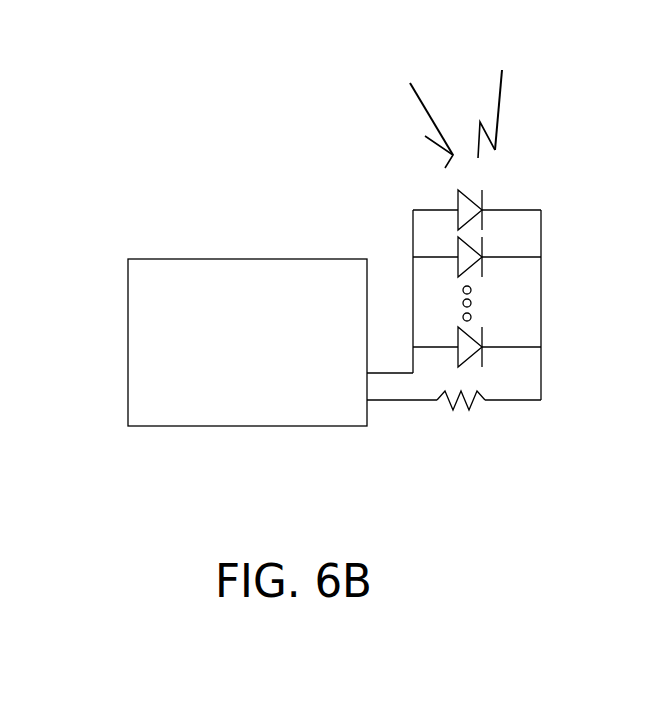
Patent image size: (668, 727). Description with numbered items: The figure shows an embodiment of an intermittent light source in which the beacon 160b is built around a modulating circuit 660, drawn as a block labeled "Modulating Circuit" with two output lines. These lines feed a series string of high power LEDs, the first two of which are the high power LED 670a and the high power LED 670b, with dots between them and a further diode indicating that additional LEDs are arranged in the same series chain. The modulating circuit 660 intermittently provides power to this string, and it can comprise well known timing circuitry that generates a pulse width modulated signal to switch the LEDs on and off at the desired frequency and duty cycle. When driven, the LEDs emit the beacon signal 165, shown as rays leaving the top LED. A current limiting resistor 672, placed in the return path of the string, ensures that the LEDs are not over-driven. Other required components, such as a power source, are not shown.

The beacon 160b is at (168, 110).
The beacon signal 165 is at (430, 121).
The modulating circuit 660 is at (240, 260).
The high power LED 670a is at (472, 197).
The high power LED 670b is at (483, 250).
The current limiting resistor 672 is at (438, 412).